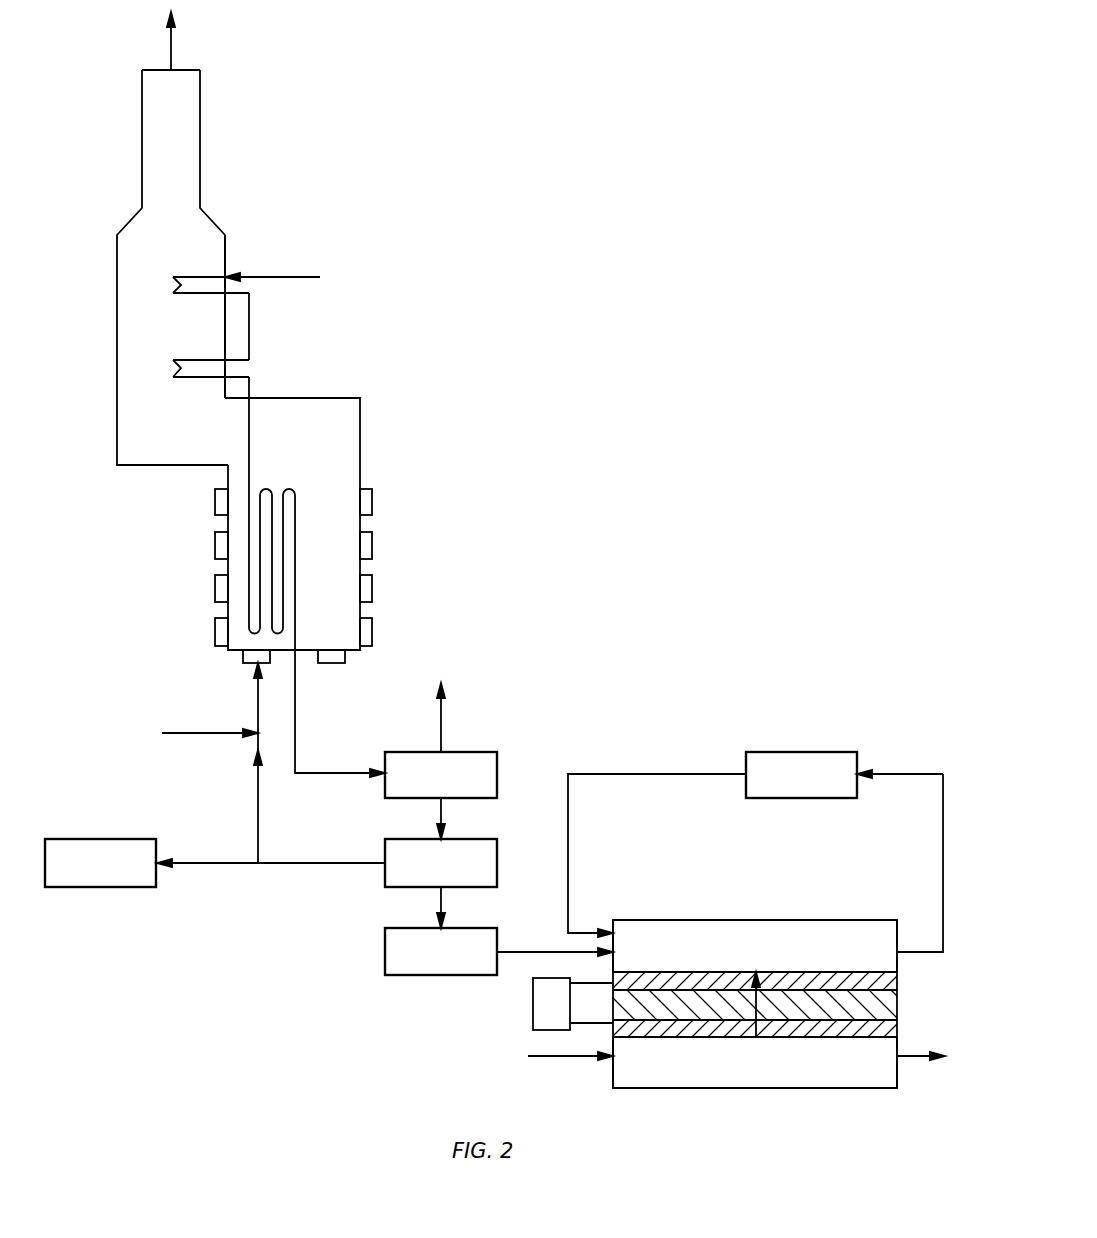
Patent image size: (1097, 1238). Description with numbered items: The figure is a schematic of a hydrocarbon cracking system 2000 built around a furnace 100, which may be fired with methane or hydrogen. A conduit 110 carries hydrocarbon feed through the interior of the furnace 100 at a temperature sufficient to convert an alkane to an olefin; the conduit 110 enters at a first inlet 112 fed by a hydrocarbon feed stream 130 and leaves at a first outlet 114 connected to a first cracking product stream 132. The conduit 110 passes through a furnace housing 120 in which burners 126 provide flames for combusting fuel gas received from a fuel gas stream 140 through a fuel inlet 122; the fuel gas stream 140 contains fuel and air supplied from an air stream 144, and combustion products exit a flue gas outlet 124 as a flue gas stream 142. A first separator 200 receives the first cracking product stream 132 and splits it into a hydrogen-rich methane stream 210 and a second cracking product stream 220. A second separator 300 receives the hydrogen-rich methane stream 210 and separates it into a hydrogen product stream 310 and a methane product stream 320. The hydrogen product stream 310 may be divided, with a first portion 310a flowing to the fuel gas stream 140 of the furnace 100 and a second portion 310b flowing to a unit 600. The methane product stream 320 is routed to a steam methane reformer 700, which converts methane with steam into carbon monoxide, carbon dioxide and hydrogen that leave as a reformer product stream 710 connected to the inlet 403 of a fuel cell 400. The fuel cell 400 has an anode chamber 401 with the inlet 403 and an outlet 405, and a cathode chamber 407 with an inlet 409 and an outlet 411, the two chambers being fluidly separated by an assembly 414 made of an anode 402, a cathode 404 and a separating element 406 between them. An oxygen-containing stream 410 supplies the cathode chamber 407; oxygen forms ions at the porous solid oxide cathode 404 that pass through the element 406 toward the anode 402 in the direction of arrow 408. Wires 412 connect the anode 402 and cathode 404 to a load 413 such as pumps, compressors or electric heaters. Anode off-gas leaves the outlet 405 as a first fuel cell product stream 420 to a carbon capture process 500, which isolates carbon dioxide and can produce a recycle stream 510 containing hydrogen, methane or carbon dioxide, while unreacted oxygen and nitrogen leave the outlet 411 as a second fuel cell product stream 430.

The hydrocarbon cracking system 2000 is at (696, 50).
The furnace 100 is at (200, 150).
The conduit 110 is at (200, 276).
The first inlet 112 is at (227, 276).
The first outlet 114 is at (297, 653).
The furnace housing 120 is at (300, 398).
The fuel inlet 122 is at (247, 680).
The flue gas outlet 124 is at (166, 69).
The burners 126 is at (215, 547).
The hydrocarbon feed stream 130 is at (283, 278).
The first cracking product stream 132 is at (296, 724).
The fuel gas stream 140 is at (255, 705).
The flue gas stream 142 is at (172, 40).
The air stream 144 is at (200, 735).
The first separator 200 is at (441, 775).
The hydrogen-rich methane stream 210 is at (443, 810).
The second cracking product stream 220 is at (443, 718).
The second separator 300 is at (441, 863).
The hydrogen product stream 310 is at (322, 860).
The first portion of the hydrogen product stream 310a is at (258, 800).
The second portion of the hydrogen product stream 310b is at (212, 865).
The methane product stream 320 is at (443, 902).
The fuel cell 400 is at (689, 908).
The anode chamber 401 is at (748, 933).
The anode 402 is at (692, 973).
The inlet 403 is at (617, 942).
The cathode 404 is at (692, 1038).
The outlet 405 is at (892, 935).
The separating element 406 is at (897, 1007).
The cathode chamber 407 is at (735, 1072).
The arrow 408 is at (760, 1006).
The inlet 409 is at (633, 1065).
The oxygen-containing stream 410 is at (566, 1058).
The outlet 411 is at (890, 1073).
The wires 412 is at (594, 982).
The load 413 is at (533, 1005).
The assembly 414 is at (826, 964).
The first fuel cell product stream 420 is at (895, 772).
The second fuel cell product stream 430 is at (920, 1060).
The carbon capture process 500 is at (801, 775).
The recycle stream 510 is at (688, 772).
The unit 600 is at (100, 863).
The steam methane reformer 700 is at (441, 951).
The reformer product stream 710 is at (536, 950).